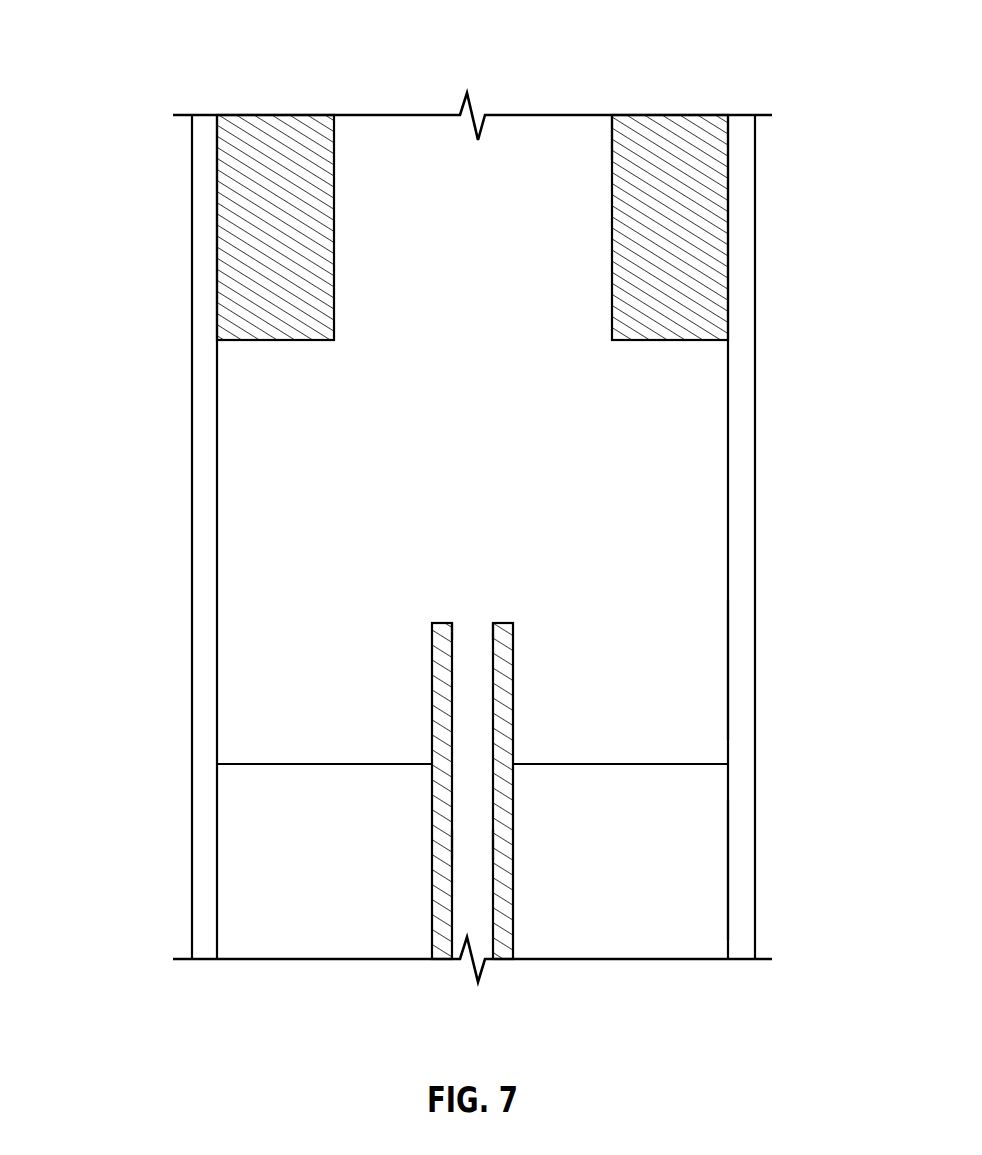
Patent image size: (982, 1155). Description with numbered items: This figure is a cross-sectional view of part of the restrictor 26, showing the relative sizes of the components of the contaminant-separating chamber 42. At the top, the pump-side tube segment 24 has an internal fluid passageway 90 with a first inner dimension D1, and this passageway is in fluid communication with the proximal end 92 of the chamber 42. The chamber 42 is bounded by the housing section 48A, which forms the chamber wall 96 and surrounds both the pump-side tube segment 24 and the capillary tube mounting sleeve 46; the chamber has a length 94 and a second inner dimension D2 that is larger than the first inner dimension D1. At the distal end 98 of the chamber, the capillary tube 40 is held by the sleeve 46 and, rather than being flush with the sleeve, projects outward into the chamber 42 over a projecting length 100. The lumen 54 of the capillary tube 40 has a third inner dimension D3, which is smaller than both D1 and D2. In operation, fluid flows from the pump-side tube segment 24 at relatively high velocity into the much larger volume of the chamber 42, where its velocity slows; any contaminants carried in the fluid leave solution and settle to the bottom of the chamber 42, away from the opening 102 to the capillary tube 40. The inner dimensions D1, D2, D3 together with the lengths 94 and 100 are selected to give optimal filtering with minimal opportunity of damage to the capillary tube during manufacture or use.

The restrictor 26 is at (130, 68).
The pump-side tube segment 24 is at (232, 243).
The capillary tube 40 is at (505, 623).
The contaminant-separating chamber 42 is at (668, 667).
The capillary tube mounting sleeve 46 is at (695, 857).
The housing section 48A is at (192, 418).
The lumen 54 is at (478, 845).
The internal fluid passageway 90 is at (610, 148).
The proximal end of chamber 92 is at (300, 341).
The chamber length 94 is at (52, 342).
The chamber wall 96 is at (728, 372).
The distal end of chamber 98 is at (278, 762).
The projecting length 100 is at (418, 624).
The opening 102 is at (470, 628).
The first inner dimension D1 is at (342, 235).
The second inner dimension D2 is at (217, 518).
The third inner dimension D3 is at (490, 828).